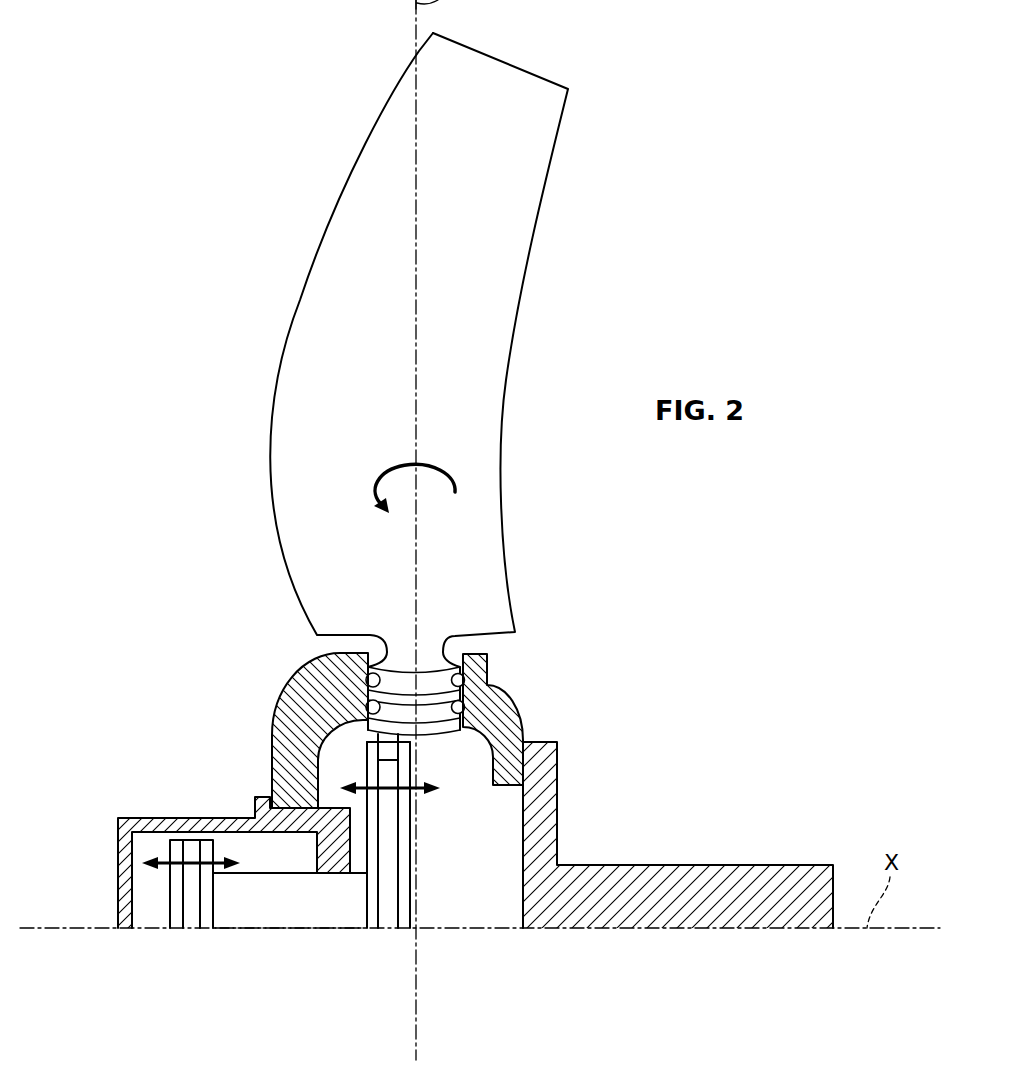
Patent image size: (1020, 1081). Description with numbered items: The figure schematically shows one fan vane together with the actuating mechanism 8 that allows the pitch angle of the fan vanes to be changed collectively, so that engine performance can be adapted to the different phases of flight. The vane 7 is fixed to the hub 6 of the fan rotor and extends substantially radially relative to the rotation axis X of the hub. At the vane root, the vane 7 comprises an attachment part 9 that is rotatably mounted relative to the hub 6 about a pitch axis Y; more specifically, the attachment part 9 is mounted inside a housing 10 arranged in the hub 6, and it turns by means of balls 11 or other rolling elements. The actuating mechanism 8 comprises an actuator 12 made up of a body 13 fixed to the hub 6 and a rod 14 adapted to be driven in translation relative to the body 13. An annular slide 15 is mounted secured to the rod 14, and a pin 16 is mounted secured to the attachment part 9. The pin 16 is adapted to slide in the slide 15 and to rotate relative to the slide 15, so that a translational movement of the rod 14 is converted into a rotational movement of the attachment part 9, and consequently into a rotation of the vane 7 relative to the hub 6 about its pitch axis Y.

The hub 6 is at (302, 722).
The vane 7 is at (454, 361).
The actuating mechanism 8 is at (170, 748).
The attachment part 9 is at (428, 715).
The housing 10 is at (458, 727).
The balls 11 is at (458, 707).
The actuator 12 is at (124, 877).
The body 13 is at (190, 837).
The rod 14 is at (293, 915).
The annular slide 15 is at (387, 915).
The pin 16 is at (382, 740).